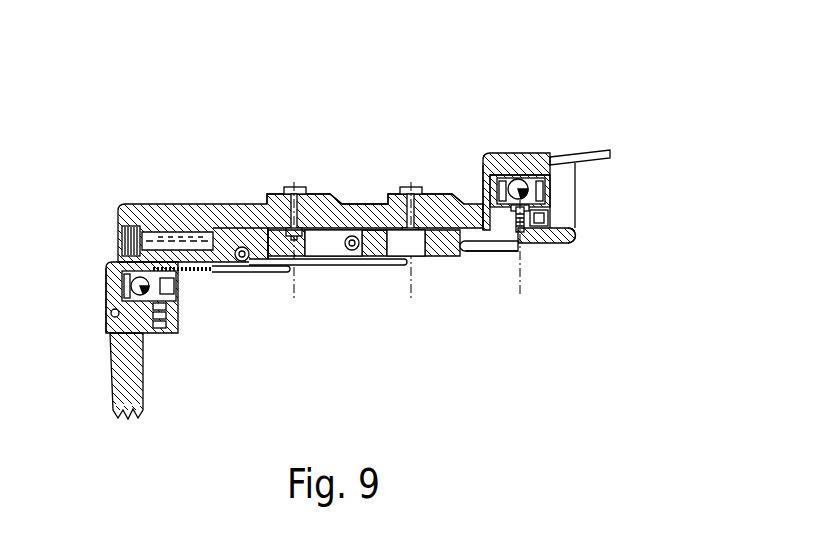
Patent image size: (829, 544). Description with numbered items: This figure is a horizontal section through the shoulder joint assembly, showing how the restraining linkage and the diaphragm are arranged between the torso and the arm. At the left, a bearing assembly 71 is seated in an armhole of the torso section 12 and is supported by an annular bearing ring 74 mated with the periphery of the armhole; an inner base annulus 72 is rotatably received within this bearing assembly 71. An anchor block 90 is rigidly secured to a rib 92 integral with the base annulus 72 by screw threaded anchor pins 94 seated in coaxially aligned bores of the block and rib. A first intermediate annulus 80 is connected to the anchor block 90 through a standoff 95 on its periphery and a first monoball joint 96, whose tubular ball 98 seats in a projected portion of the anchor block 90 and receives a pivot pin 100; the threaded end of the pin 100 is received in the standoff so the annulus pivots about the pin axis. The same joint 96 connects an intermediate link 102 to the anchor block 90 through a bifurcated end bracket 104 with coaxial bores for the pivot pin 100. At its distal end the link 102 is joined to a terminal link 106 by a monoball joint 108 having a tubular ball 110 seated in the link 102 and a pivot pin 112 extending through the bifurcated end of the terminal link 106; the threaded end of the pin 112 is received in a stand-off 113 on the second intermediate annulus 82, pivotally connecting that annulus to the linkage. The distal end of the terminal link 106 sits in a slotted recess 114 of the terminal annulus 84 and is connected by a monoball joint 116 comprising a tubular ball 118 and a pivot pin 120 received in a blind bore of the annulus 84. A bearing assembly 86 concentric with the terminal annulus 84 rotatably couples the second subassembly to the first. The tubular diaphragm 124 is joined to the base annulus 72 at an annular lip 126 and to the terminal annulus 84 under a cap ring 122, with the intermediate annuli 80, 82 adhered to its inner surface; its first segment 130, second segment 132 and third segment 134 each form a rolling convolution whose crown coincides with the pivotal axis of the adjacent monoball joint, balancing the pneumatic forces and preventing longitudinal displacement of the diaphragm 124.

The torso section 12 is at (122, 386).
The bearing assembly 71 is at (99, 283).
The inner base annulus 72 is at (108, 262).
The annular bearing ring 74 is at (107, 303).
The first intermediate annulus 80 is at (293, 272).
The second intermediate annulus 82 is at (340, 258).
The terminal annulus 84 is at (536, 245).
The bearing assembly 86 is at (477, 159).
The anchor block 90 is at (119, 207).
The rib 92 is at (188, 202).
The screw threaded anchor pins 94 is at (160, 210).
The standoff 95 is at (247, 200).
The first monoball joint 96 is at (316, 188).
The tubular ball 98 is at (277, 200).
The pivot pin 100 is at (292, 186).
The intermediate link 102 is at (362, 226).
The bifurcated end bracket 104 is at (352, 203).
The terminal link 106 is at (466, 203).
The monoball joint 108 is at (401, 188).
The tubular ball 110 is at (434, 245).
The pivot pin 112 is at (424, 248).
The stand-off 113 is at (392, 252).
The slotted recess 114 is at (472, 252).
The monoball joint 116 is at (552, 190).
The tubular ball 118 is at (550, 200).
The pivot pin 120 is at (552, 217).
The cap ring 122 is at (572, 244).
The diaphragm 124 is at (239, 290).
The annular lip 126 is at (219, 278).
The first segment 130 is at (262, 278).
The second segment 132 is at (346, 262).
The third segment 134 is at (462, 254).